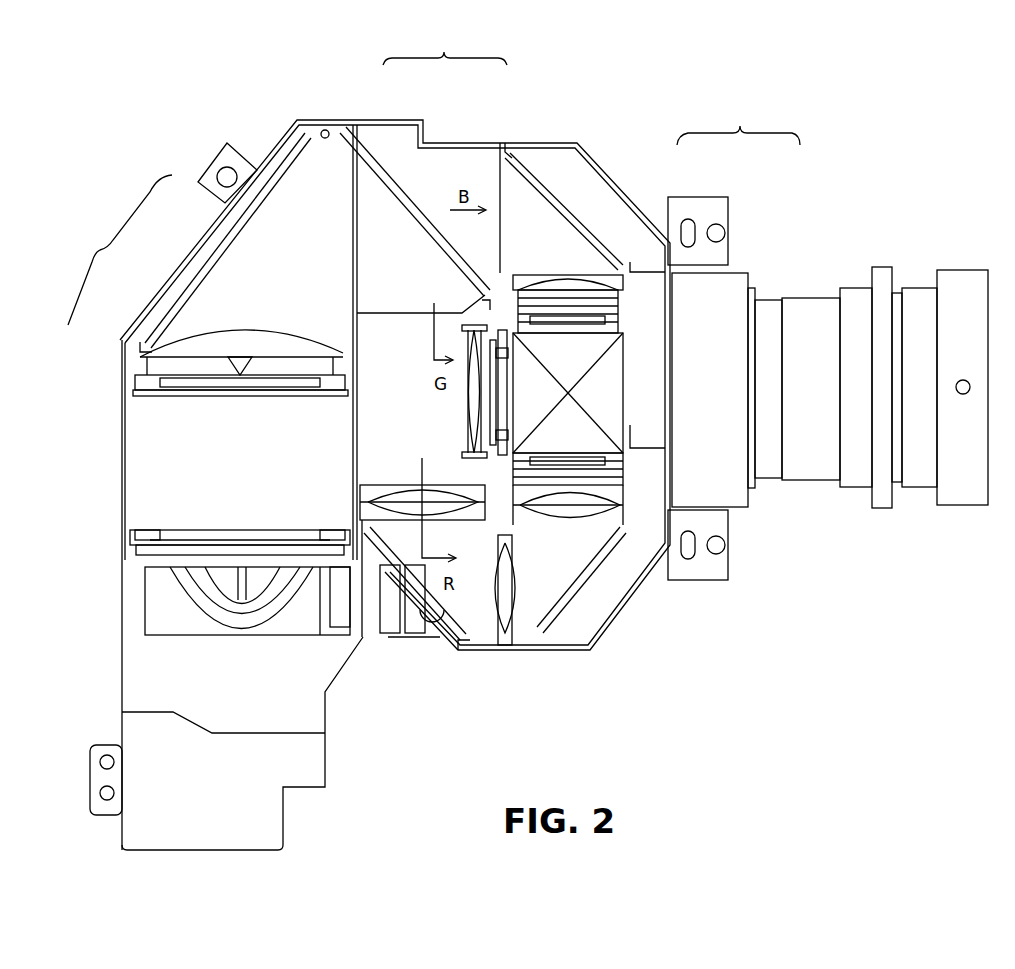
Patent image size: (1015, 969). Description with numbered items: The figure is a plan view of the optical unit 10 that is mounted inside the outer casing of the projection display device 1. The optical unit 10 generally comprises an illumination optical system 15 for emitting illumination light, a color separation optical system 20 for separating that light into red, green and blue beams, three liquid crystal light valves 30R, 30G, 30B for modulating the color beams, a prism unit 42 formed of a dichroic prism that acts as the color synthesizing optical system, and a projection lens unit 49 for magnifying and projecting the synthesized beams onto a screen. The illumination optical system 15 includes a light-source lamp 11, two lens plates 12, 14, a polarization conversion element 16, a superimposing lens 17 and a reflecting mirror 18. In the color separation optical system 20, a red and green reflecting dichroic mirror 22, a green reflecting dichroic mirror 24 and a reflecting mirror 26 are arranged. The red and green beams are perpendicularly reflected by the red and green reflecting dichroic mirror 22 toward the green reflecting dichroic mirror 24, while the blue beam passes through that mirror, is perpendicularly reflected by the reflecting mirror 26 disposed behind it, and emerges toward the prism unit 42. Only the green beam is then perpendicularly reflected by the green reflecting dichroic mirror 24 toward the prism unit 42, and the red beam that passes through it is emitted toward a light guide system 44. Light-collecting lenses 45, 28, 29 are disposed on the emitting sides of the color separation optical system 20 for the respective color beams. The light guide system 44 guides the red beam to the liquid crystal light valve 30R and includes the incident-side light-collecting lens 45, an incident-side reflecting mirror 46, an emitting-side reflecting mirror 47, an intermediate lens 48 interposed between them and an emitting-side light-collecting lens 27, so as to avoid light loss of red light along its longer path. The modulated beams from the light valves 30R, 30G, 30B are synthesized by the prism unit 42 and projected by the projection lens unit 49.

The projection display device 1 is at (872, 76).
The optical unit 10 is at (738, 124).
The light-source lamp 11 is at (170, 601).
The lens plate 12 is at (195, 530).
The lens plate 14 is at (197, 372).
The illumination optical system 15 is at (120, 250).
The polarization conversion element 16 is at (273, 369).
The superimposing lens 17 is at (275, 335).
The reflecting mirror 18 is at (222, 232).
The color separation optical system 20 is at (445, 47).
The red and green reflecting dichroic mirror 22 is at (392, 340).
The green reflecting dichroic mirror 24 is at (399, 380).
The reflecting mirror 26 is at (533, 165).
The relay lens 27 is at (567, 520).
The light-collecting lens 28 is at (466, 340).
The light-collecting lens 29 is at (565, 280).
The liquid crystal light valve 30B is at (610, 315).
The liquid crystal light valve 30G is at (508, 454).
The liquid crystal light valve 30R is at (617, 473).
The prism unit 42 is at (610, 383).
The light guide system 44 is at (432, 706).
The incident-side light-collecting lens 45 is at (397, 518).
The incident-side reflecting mirror 46 is at (437, 607).
The emitting-side reflecting mirror 47 is at (607, 553).
The intermediate lens 48 is at (515, 576).
The projection lens unit 49 is at (993, 520).